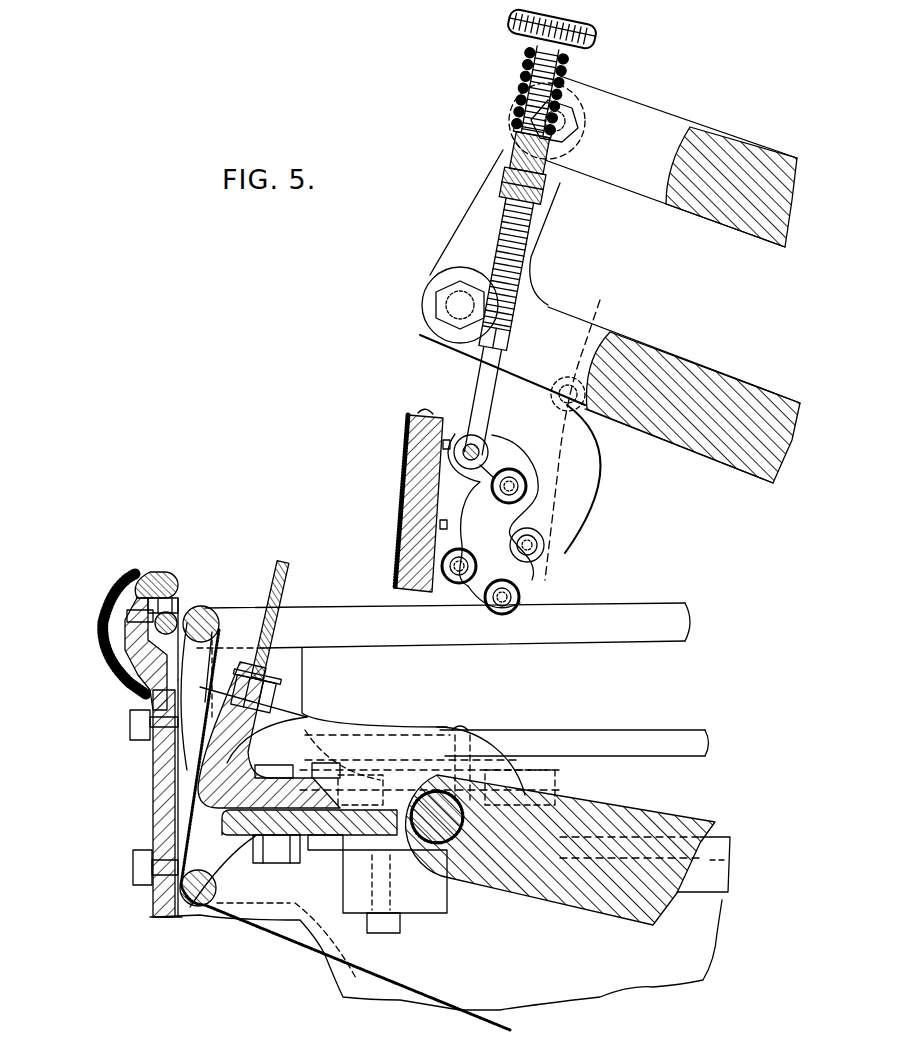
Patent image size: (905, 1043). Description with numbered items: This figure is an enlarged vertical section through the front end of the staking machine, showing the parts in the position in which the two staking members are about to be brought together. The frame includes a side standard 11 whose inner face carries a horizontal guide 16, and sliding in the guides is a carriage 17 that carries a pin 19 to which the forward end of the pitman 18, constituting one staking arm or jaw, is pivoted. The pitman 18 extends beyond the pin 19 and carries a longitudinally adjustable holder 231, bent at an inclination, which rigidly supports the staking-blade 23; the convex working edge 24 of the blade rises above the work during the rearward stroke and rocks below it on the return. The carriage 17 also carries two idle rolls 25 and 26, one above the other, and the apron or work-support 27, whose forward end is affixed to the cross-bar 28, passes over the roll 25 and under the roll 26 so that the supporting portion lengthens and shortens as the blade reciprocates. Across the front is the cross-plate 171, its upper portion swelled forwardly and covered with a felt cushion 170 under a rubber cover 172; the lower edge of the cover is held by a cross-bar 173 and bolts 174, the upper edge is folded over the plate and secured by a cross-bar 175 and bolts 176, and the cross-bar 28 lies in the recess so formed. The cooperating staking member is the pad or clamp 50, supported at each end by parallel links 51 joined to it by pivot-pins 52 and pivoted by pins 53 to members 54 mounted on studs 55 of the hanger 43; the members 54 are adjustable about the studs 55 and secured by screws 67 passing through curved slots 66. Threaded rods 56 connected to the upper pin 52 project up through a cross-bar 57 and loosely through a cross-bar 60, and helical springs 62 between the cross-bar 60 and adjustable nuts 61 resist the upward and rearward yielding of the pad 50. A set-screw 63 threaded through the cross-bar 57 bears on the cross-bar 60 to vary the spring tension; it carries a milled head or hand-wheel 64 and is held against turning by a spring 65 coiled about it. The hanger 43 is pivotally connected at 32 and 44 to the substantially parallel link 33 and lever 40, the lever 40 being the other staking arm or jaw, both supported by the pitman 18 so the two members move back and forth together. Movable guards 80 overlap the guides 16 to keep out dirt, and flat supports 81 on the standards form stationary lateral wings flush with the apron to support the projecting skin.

The side standard 11 is at (703, 935).
The guide 16 is at (730, 870).
The slide or carriage 17 is at (343, 877).
The pitman 18 is at (700, 820).
The pin 19 is at (445, 840).
The staking-blade 23 is at (276, 628).
The convex working edge 24 is at (287, 582).
The idle roll 25 is at (204, 606).
The idle roll 26 is at (195, 908).
The apron or work-support 27 is at (478, 1022).
The cross-bar 28 is at (120, 668).
The pivot 32 is at (446, 310).
The link 33 is at (722, 380).
The lever 40 is at (730, 146).
The hanger 43 is at (490, 168).
The pivot 44 is at (568, 108).
The pad or clamp 50 is at (406, 466).
The parallel links 51 is at (478, 645).
The pivot-pins 52 is at (478, 450).
The pins 53 is at (525, 486).
The members 54 is at (558, 514).
The studs 55 is at (545, 548).
The threaded rods 56 is at (470, 386).
The cross-bar 57 is at (545, 170).
The cross-bar 60 is at (505, 190).
The adjustable nuts 61 is at (480, 347).
The helical springs 62 is at (480, 228).
The set-screw 63 is at (520, 68).
The knob 64 is at (508, 21).
The spring 65 is at (515, 115).
The slots 66 is at (553, 374).
The screws 67 is at (588, 330).
The movable guards 80 is at (678, 742).
The flat supports 81 is at (688, 618).
The cushion or pad 170 is at (103, 630).
The cross-plate 171 is at (158, 807).
The rubber cover 172 is at (118, 600).
The cross-bar 173 is at (140, 757).
The bolts 174 is at (130, 725).
The cross-bar 175 is at (163, 574).
The bolts 176 is at (148, 578).
The holder 231 is at (306, 714).